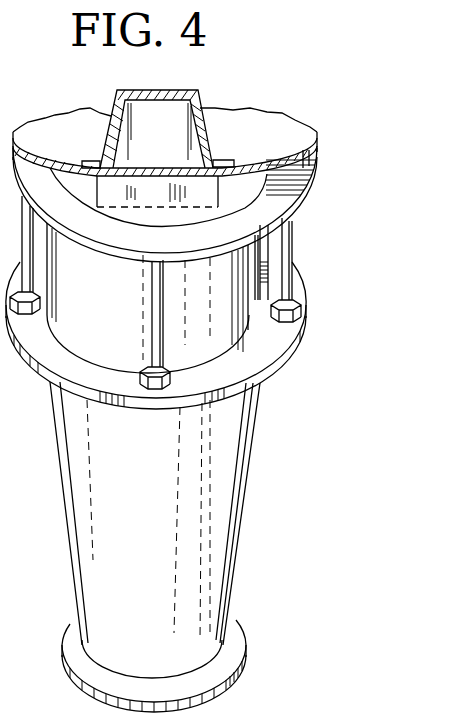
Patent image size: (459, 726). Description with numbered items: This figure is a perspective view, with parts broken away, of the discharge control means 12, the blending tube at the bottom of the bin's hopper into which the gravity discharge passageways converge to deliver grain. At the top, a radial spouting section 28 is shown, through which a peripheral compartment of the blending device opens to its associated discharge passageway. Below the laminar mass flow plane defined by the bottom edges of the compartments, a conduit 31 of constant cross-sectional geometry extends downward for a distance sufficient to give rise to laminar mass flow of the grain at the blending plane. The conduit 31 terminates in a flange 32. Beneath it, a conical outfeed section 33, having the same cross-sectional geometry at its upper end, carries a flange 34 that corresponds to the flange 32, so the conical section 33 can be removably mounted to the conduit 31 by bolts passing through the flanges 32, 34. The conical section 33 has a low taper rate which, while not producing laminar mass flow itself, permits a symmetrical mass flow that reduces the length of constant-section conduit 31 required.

The discharge control means 12 is at (340, 298).
The radial spouting section 28 is at (208, 127).
The conduit 31 is at (250, 275).
The flange 32 is at (278, 345).
The conical outfeed section 33 is at (268, 383).
The flange 34 is at (232, 560).